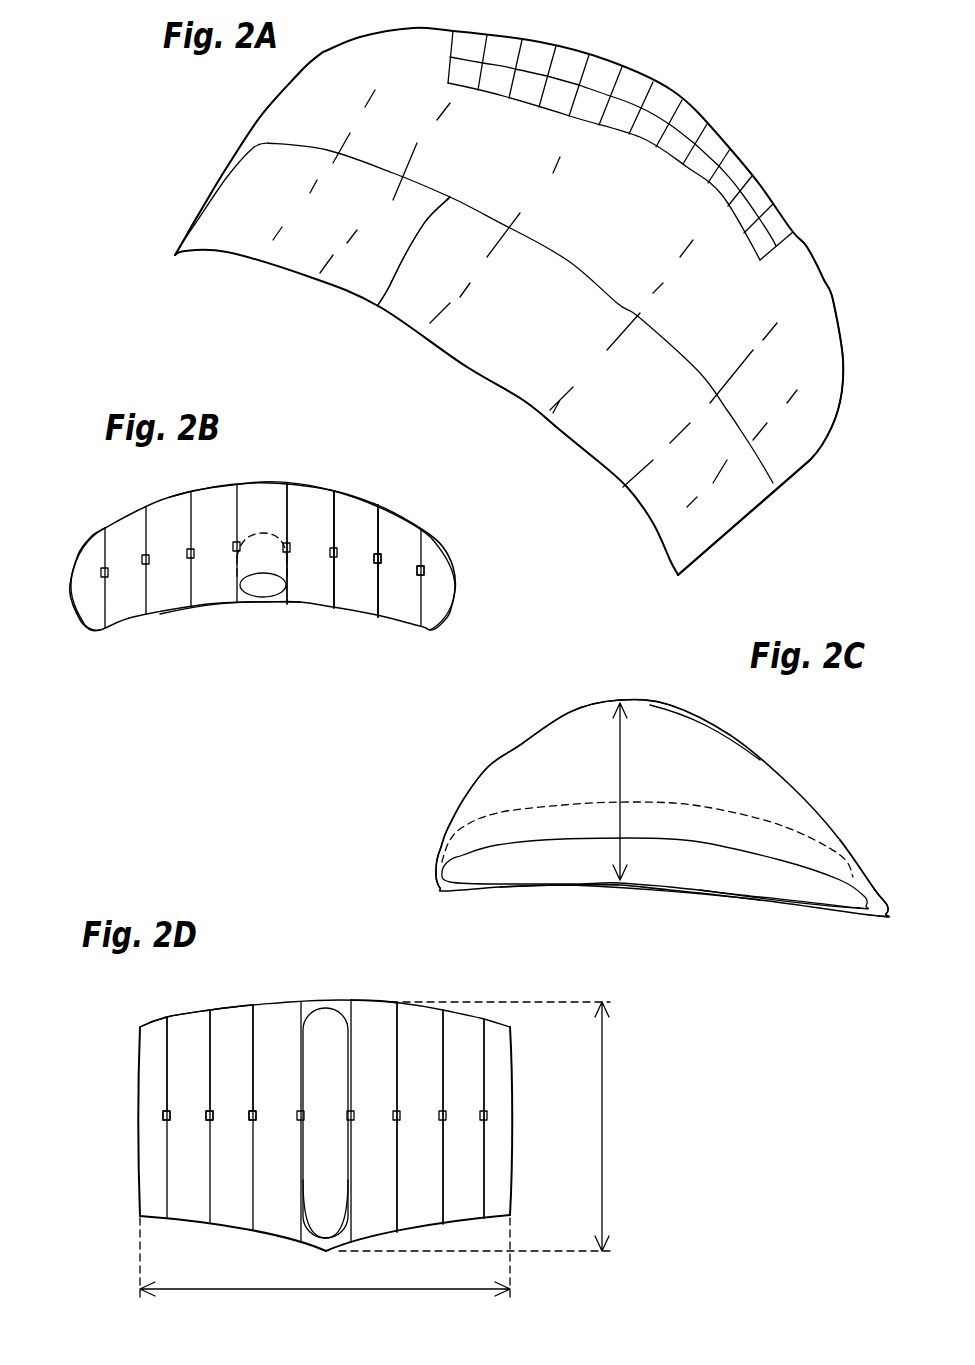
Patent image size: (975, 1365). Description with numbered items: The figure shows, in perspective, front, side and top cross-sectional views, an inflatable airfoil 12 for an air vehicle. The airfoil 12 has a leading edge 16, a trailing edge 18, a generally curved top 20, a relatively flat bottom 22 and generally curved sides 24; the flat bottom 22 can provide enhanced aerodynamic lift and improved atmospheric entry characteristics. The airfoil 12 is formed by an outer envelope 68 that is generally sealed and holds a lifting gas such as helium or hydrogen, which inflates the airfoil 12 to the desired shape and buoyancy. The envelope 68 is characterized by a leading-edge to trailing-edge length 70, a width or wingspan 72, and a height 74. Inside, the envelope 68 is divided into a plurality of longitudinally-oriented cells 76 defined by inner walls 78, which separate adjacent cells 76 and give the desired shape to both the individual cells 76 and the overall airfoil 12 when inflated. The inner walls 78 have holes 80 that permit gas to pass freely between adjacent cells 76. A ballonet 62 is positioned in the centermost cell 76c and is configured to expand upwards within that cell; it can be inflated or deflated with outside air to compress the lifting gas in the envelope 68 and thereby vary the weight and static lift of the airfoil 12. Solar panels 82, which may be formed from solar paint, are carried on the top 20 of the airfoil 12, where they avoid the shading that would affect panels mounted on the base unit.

In FIG. 2A, the inflatable airfoil 12 is at (817, 256).
In FIG. 2B, the inflatable airfoil 12 is at (445, 626).
In FIG. 2C, the inflatable airfoil 12 is at (813, 805).
In FIG. 2D, the inflatable airfoil 12 is at (513, 1107).
In FIG. 2A, the leading edge 16 is at (378, 304).
In FIG. 2C, the leading edge 16 is at (437, 885).
In FIG. 2D, the leading edge 16 is at (375, 1005).
In FIG. 2C, the trailing edge 18 is at (887, 915).
In FIG. 2A, the top 20 is at (657, 202).
In FIG. 2B, the top 20 is at (308, 487).
In FIG. 2C, the top 20 is at (672, 710).
In FIG. 2A, the bottom 22 is at (608, 440).
In FIG. 2B, the bottom 22 is at (200, 607).
In FIG. 2C, the bottom 22 is at (650, 892).
In FIG. 2A, the sides 24 is at (810, 458).
In FIG. 2B, the sides 24 is at (457, 573).
In FIG. 2B, the ballonet 62 is at (263, 592).
In FIG. 2C, the ballonet 62 is at (766, 877).
In FIG. 2D, the ballonet 62 is at (316, 1222).
In FIG. 2A, the outer envelope 68 is at (847, 356).
In FIG. 2B, the outer envelope 68 is at (447, 540).
In FIG. 2C, the outer envelope 68 is at (520, 750).
In FIG. 2D, the outer envelope 68 is at (227, 1010).
In FIG. 2D, the leading-edge to trailing-edge length 70 is at (603, 1107).
In FIG. 2D, the width/wingspan 72 is at (377, 1291).
In FIG. 2C, the height 74 is at (618, 758).
In FIG. 2B, the cells 76 is at (397, 608).
In FIG. 2D, the cells 76 is at (497, 1028).
In FIG. 2B, the centermost cell 76c is at (265, 490).
In FIG. 2C, the centermost cell 76c is at (712, 745).
In FIG. 2D, the centermost cell 76c is at (311, 1007).
In FIG. 2B, the inner walls 78 is at (378, 523).
In FIG. 2D, the inner walls 78 is at (167, 1062).
In FIG. 2B, the holes 80 is at (417, 570).
In FIG. 2D, the holes 80 is at (250, 1110).
In FIG. 2A, the solar panels 82 is at (660, 140).